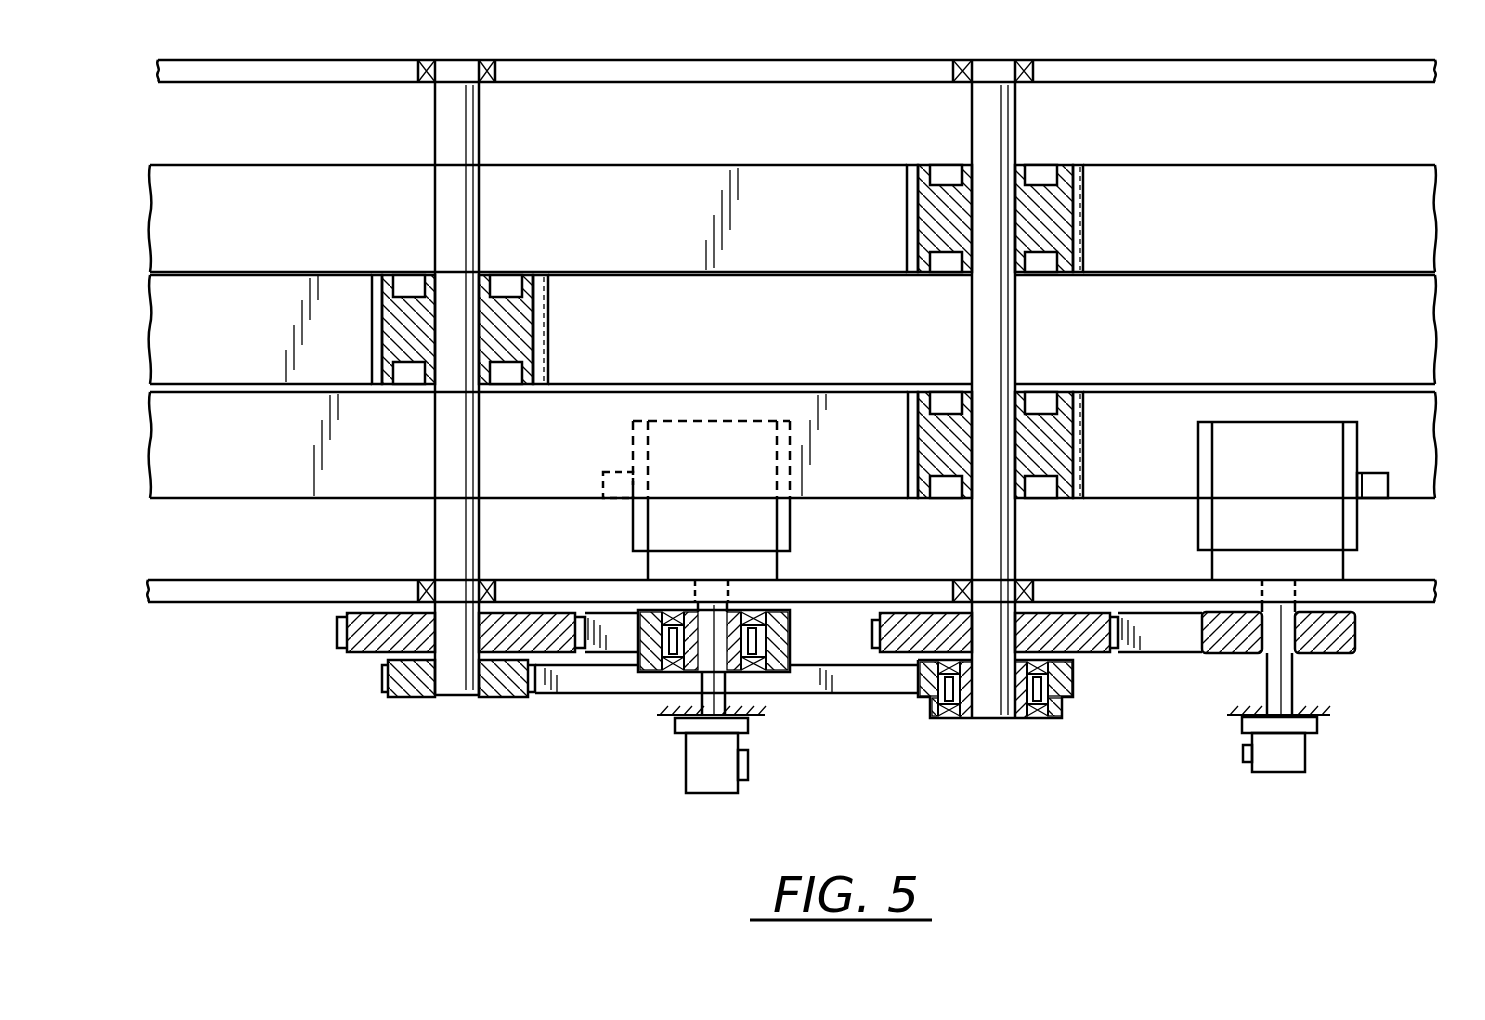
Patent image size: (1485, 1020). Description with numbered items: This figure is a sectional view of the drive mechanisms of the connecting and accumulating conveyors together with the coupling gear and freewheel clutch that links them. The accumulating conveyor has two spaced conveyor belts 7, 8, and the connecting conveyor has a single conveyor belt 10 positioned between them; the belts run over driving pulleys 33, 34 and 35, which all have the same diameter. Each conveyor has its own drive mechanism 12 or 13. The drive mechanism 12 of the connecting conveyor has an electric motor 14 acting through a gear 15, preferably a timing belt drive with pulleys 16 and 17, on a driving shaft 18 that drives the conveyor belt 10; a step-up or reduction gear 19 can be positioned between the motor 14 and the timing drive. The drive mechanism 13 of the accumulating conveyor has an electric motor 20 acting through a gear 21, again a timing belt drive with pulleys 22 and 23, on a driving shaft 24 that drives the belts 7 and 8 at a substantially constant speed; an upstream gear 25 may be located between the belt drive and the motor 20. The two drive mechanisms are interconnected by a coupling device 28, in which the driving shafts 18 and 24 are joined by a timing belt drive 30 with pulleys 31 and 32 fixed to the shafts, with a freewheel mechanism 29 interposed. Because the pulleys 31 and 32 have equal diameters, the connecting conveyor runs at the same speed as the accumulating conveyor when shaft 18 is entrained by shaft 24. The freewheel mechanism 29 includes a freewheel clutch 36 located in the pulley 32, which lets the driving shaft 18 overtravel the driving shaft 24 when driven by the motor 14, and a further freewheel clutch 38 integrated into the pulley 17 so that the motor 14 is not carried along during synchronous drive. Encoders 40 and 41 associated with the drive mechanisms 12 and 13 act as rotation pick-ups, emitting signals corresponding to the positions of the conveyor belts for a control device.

The conveyor belt 7 is at (840, 455).
The conveyor belt 8 is at (838, 228).
The conveyor belt 10 is at (224, 340).
The drive mechanism 12 is at (625, 653).
The drive mechanism 13 is at (1350, 663).
The electric motor 14 is at (605, 478).
The gear 15 is at (793, 577).
The pulley 16 is at (347, 650).
The pulley 17 is at (782, 672).
The driving shaft 18 is at (443, 523).
The step-up or reduction gear 19 is at (648, 530).
The electric motor 20 is at (1390, 492).
The gear 21 is at (1380, 578).
The pulley 22 is at (1098, 655).
The pulley 23 is at (1350, 652).
The driving shaft 24 is at (1012, 558).
The motor 25 is at (1222, 563).
The coupling device 28 is at (558, 703).
The freewheel mechanism 29 is at (1020, 722).
The timing belt drive 30 is at (855, 680).
The pulley 31 is at (402, 692).
The pulley 32 is at (1062, 700).
The driving pulley 33 is at (1062, 215).
The driving pulley 34 is at (1062, 428).
The driving pulley 35 is at (527, 323).
The freewheel clutch 36 is at (950, 720).
The freewheel clutch 38 is at (668, 685).
The encoder 40 is at (716, 792).
The encoder 41 is at (1305, 748).